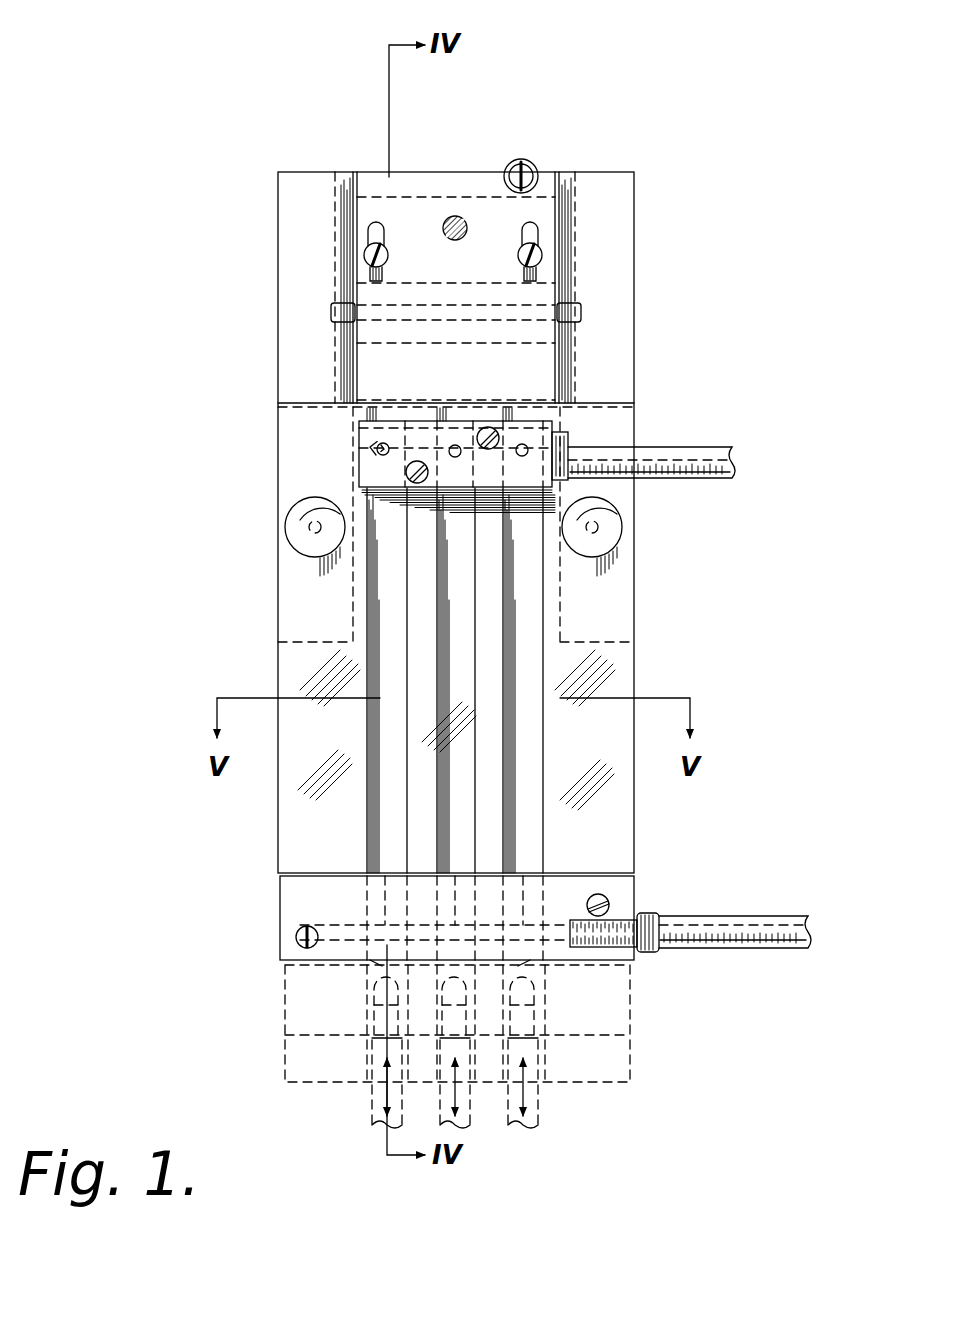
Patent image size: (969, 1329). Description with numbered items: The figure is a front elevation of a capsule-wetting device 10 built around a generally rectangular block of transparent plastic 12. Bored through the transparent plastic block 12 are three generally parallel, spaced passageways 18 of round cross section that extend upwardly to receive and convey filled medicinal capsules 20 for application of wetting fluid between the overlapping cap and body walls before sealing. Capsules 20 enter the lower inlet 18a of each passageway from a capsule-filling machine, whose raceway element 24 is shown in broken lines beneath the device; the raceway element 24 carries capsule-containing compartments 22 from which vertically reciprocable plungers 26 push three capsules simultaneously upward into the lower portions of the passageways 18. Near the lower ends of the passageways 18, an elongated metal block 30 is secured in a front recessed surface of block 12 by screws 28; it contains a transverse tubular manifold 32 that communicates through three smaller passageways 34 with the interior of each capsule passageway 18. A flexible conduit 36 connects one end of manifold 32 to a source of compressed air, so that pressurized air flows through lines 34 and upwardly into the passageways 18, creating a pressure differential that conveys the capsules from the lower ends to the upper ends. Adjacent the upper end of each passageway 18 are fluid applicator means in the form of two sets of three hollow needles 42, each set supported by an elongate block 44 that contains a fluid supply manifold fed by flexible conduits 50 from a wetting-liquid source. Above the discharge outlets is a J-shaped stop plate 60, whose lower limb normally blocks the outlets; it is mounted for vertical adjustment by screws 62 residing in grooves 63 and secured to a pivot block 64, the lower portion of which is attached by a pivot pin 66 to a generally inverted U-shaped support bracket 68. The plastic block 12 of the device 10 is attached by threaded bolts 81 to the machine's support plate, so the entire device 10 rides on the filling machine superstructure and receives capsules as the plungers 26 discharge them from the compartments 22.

The capsule-wetting device 10 is at (645, 584).
The transparent plastic block 12 is at (293, 662).
The passageways 18 is at (440, 632).
The lower inlet 18a is at (378, 956).
The filled medicinal capsules 20 is at (374, 1018).
The capsule-containing compartments 22 is at (400, 1022).
The raceway element 24 is at (630, 1014).
The plungers 26 is at (371, 1106).
The screws 28 is at (297, 941).
The metal block 30 is at (286, 892).
The manifold 32 is at (373, 929).
The smaller passageways 34 is at (442, 902).
The flexible conduit 36 is at (730, 914).
The hollow needles 42 is at (358, 462).
The elongate block 44 is at (368, 432).
The flexible conduits 50 is at (714, 443).
The J-shaped plate 60 is at (470, 382).
The screws 62 is at (388, 256).
The grooves 63 is at (380, 223).
The pivot block 64 is at (476, 328).
The pivot pin 66 is at (400, 320).
The support bracket 68 is at (625, 278).
The threaded bolts 81 is at (285, 532).